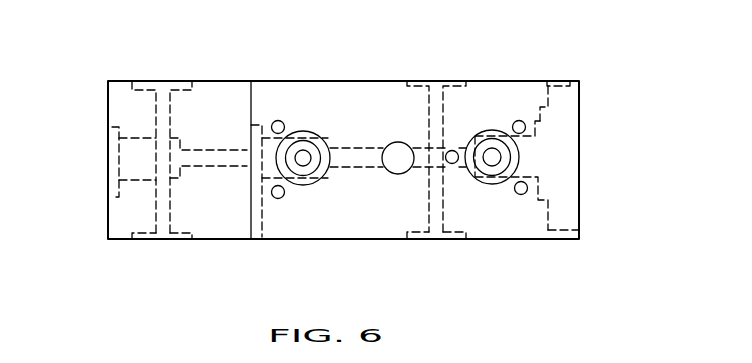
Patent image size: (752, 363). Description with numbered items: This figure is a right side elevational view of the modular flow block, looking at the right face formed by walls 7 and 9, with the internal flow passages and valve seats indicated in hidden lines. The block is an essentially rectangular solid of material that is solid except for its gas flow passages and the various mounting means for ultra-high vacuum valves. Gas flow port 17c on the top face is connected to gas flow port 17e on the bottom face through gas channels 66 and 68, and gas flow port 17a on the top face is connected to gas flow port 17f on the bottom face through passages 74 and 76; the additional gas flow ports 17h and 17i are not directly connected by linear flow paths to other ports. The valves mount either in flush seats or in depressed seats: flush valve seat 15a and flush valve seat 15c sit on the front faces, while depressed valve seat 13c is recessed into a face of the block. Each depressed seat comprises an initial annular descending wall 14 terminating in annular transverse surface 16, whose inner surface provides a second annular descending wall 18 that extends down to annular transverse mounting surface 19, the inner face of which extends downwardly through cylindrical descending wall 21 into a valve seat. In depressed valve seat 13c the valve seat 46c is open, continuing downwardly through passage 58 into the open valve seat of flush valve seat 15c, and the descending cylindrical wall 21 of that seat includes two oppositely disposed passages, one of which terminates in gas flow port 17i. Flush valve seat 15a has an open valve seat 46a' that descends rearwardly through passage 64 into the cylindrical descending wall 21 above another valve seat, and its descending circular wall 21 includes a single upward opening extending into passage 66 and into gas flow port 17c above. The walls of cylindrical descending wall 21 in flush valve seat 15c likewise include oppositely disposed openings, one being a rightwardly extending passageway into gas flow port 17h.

The wall 7 is at (197, 208).
The wall 9 is at (412, 200).
The depressed valve seat 13c is at (587, 92).
The initial annular descending wall 14 is at (565, 106).
The flush valve seat 15a is at (110, 143).
The flush valve seat 15c is at (253, 197).
The annular transverse surface 16 is at (550, 218).
The gas flow port 17a is at (448, 80).
The gas flow port 17c is at (155, 85).
The gas flow port 17e is at (158, 238).
The gas flow port 17f is at (462, 240).
The gas flow port 17h is at (302, 131).
The gas flow port 17i is at (493, 128).
The second annular descending wall 18 is at (543, 200).
The annular transverse mounting surface 19 is at (538, 125).
The cylindrical descending wall 21 is at (552, 148).
The open valve seat 46a' is at (223, 101).
The valve seat 46c is at (330, 160).
The passage 58 is at (350, 147).
The passage 64 is at (223, 167).
The gas channel 66 is at (157, 110).
The gas channel 68 is at (157, 202).
The passage 74 is at (443, 100).
The passage 76 is at (444, 205).